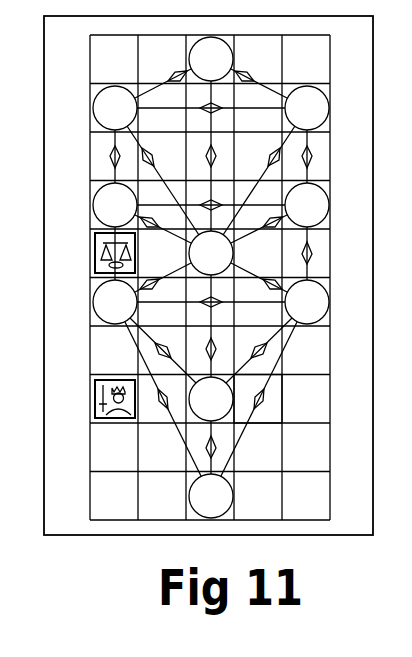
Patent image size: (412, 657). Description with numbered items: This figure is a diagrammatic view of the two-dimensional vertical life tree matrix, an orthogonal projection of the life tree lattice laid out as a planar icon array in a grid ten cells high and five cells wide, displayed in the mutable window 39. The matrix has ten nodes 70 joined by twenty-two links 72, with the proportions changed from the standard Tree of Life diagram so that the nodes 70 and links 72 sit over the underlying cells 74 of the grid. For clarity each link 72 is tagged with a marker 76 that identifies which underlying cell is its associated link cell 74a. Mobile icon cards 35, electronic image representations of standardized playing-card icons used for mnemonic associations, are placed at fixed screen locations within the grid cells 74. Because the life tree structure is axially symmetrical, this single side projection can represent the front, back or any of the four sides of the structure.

The mutable window 39 is at (373, 86).
The mobile icon cards 35 is at (96, 253).
The node 70 is at (103, 296).
The link 72 is at (157, 368).
The cell 74 is at (321, 391).
The associated link cell 74a is at (268, 413).
The marker 76 is at (262, 398).